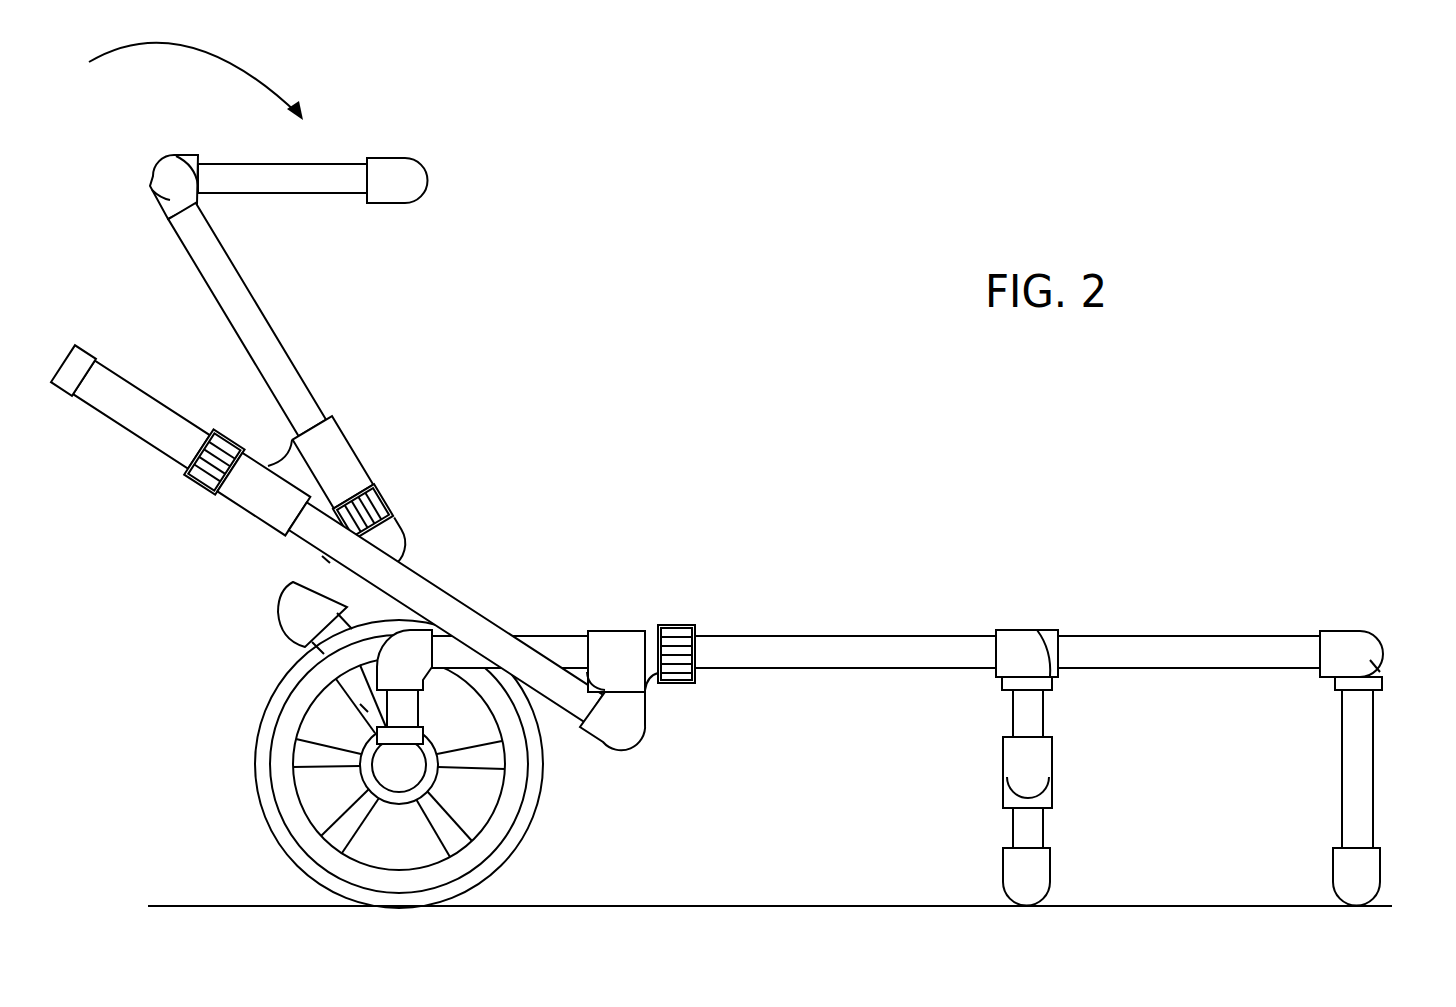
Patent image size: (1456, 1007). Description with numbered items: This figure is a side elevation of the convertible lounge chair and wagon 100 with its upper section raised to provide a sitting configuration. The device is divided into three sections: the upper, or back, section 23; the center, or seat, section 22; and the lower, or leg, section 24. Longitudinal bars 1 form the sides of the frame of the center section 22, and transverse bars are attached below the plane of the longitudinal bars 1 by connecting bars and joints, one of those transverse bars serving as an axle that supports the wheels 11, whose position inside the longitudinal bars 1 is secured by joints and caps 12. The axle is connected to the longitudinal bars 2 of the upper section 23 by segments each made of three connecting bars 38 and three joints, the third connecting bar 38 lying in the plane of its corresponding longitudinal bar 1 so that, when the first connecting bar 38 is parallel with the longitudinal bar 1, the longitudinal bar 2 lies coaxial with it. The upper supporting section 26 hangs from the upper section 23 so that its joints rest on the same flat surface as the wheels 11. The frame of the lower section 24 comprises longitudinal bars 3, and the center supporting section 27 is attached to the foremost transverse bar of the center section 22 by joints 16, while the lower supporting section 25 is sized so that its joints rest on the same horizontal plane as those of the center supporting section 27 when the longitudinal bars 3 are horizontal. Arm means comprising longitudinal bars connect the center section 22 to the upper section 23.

The longitudinal bars 1 is at (807, 655).
The longitudinal bars 2 is at (232, 282).
The longitudinal bars 3 is at (1180, 648).
The wheels 11 is at (243, 774).
The caps 12 is at (385, 777).
The joints 16 is at (1069, 792).
The center section 22 is at (833, 705).
The upper section 23 is at (296, 334).
The lower section 24 is at (1203, 721).
The lower supporting section 25 is at (1318, 795).
The upper supporting section 26 is at (255, 152).
The center supporting section 27 is at (981, 822).
The connecting bars 38 is at (314, 563).
The convertible lounge chair and wagon 100 is at (194, 723).